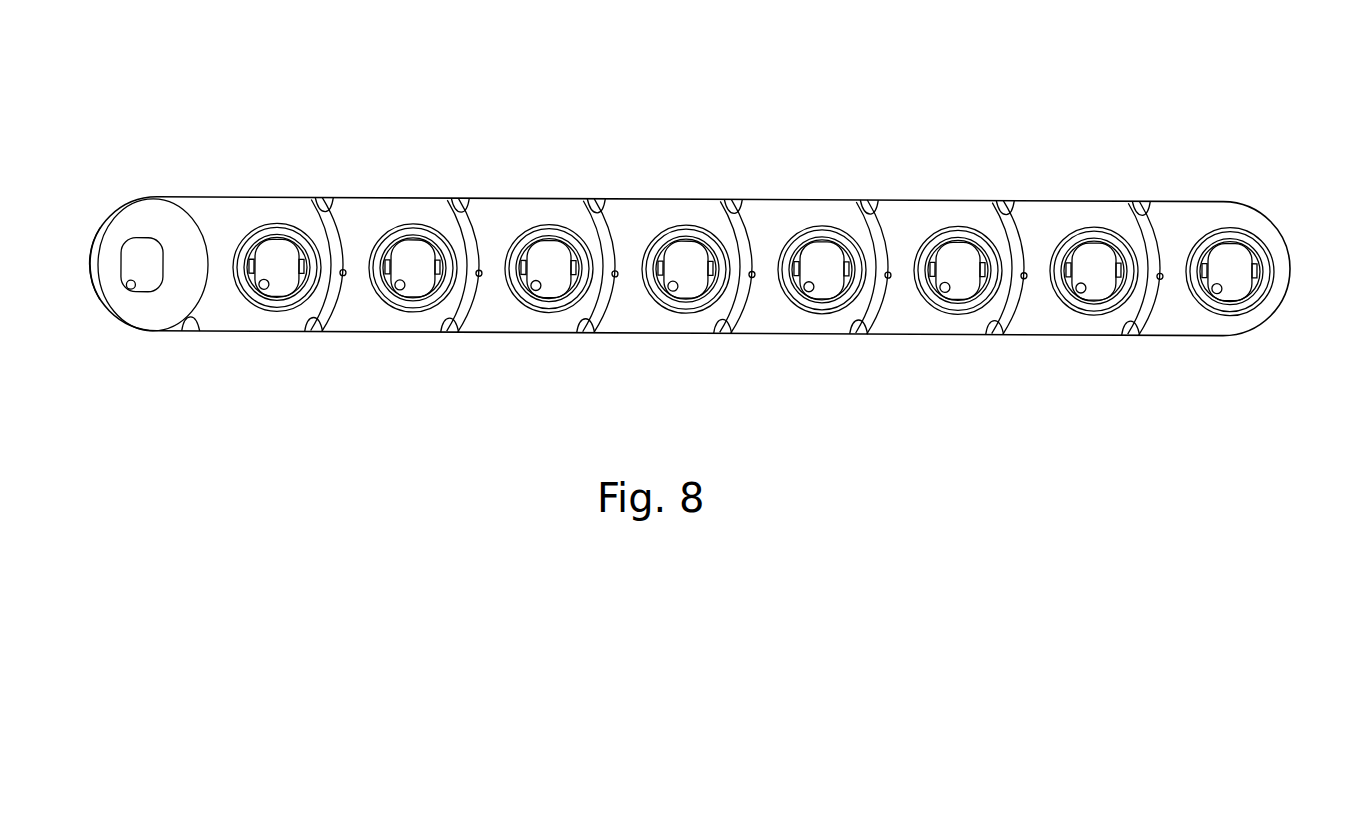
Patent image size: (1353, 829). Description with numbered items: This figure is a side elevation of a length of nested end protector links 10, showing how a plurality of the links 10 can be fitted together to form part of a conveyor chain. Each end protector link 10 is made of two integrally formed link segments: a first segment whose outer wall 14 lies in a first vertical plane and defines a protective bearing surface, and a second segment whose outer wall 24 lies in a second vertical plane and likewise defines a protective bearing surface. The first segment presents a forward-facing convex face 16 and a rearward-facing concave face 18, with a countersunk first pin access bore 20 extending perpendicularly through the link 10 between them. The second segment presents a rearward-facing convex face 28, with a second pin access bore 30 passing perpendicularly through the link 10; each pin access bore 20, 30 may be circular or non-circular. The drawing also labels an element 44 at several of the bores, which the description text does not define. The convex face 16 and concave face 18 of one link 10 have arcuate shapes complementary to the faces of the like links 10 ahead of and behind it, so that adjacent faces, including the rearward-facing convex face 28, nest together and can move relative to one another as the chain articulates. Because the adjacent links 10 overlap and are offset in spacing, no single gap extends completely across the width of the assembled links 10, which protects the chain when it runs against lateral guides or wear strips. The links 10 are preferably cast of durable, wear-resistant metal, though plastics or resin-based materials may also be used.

The end protector link 10 is at (267, 178).
The outer wall 14 is at (212, 213).
The forward-facing convex face 16 is at (329, 207).
The rearward-facing concave face 18 is at (191, 318).
The first pin access bore 20 is at (294, 302).
The outer wall 24 is at (148, 215).
The rearward-facing convex face 28 is at (93, 268).
The second pin access bore 30 is at (139, 290).
The threaded bore 44 is at (269, 252).